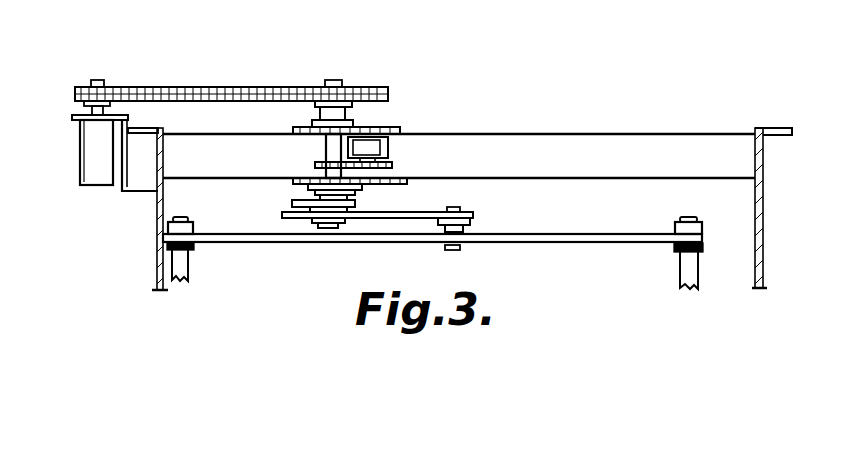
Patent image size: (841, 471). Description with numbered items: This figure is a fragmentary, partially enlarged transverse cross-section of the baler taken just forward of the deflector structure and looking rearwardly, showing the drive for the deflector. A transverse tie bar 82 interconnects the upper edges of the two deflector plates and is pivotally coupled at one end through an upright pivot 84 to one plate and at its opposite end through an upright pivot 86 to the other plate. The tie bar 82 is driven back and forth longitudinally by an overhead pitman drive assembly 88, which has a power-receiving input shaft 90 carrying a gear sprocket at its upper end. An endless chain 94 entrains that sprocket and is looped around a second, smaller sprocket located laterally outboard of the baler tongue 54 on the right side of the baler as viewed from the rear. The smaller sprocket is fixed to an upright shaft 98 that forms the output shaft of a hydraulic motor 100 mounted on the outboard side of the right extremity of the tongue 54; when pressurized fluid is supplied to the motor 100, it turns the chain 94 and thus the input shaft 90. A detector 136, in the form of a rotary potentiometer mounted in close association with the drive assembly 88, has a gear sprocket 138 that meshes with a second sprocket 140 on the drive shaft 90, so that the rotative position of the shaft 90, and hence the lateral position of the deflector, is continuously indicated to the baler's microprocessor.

The tongue 54 is at (157, 274).
The tie bar 82 is at (512, 242).
The upright pivot 84 is at (190, 280).
The upright pivot 86 is at (682, 280).
The pitman drive assembly 88 is at (406, 94).
The input shaft 90 is at (334, 80).
The endless chain 94 is at (191, 86).
The upright shaft 98 is at (100, 80).
The hydraulic motor 100 is at (83, 176).
The detector 136 is at (385, 148).
The gear sprocket 138 is at (392, 165).
The second sprocket 140 is at (326, 166).